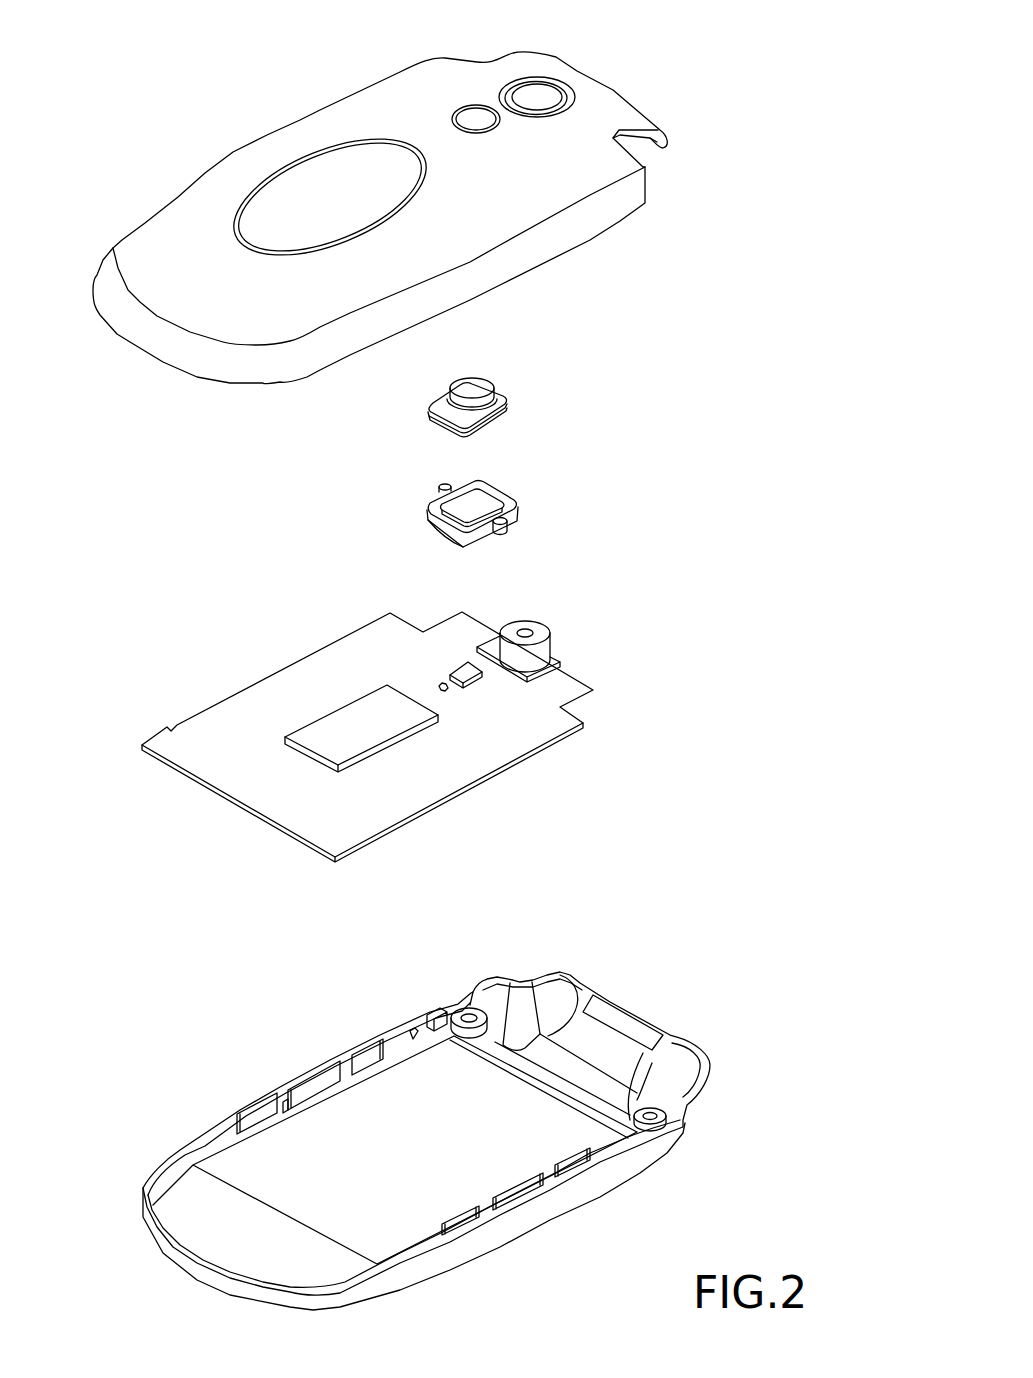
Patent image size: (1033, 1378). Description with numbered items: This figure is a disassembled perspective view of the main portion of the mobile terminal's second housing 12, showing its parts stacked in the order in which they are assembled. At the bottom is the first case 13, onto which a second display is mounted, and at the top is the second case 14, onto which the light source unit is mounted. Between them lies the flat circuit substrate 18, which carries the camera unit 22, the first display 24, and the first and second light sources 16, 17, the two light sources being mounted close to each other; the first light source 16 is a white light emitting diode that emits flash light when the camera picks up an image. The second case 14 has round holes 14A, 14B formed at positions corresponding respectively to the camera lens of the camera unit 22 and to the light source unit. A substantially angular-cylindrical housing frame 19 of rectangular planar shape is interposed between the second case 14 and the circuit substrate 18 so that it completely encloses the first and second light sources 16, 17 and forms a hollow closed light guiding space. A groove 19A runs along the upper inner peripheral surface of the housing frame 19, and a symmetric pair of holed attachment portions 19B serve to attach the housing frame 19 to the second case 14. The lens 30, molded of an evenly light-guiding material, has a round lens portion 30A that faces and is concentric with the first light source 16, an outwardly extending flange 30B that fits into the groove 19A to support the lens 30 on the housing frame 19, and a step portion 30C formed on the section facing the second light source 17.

The second housing 12 is at (743, 737).
The first case 13 is at (624, 999).
The second case 14 is at (618, 92).
The round hole 14A is at (553, 82).
The round hole 14B is at (479, 104).
The first light source 16 is at (463, 670).
The second light source 17 is at (447, 693).
The circuit substrate 18 is at (310, 847).
The housing frame 19 is at (512, 485).
The groove 19A is at (421, 524).
The attachment portion 19B is at (452, 489).
The camera unit 22 is at (555, 633).
The first display 24 is at (373, 738).
The lens 30 is at (438, 384).
The lens portion 30A is at (478, 383).
The flange 30B is at (510, 398).
The step portion 30C is at (435, 401).